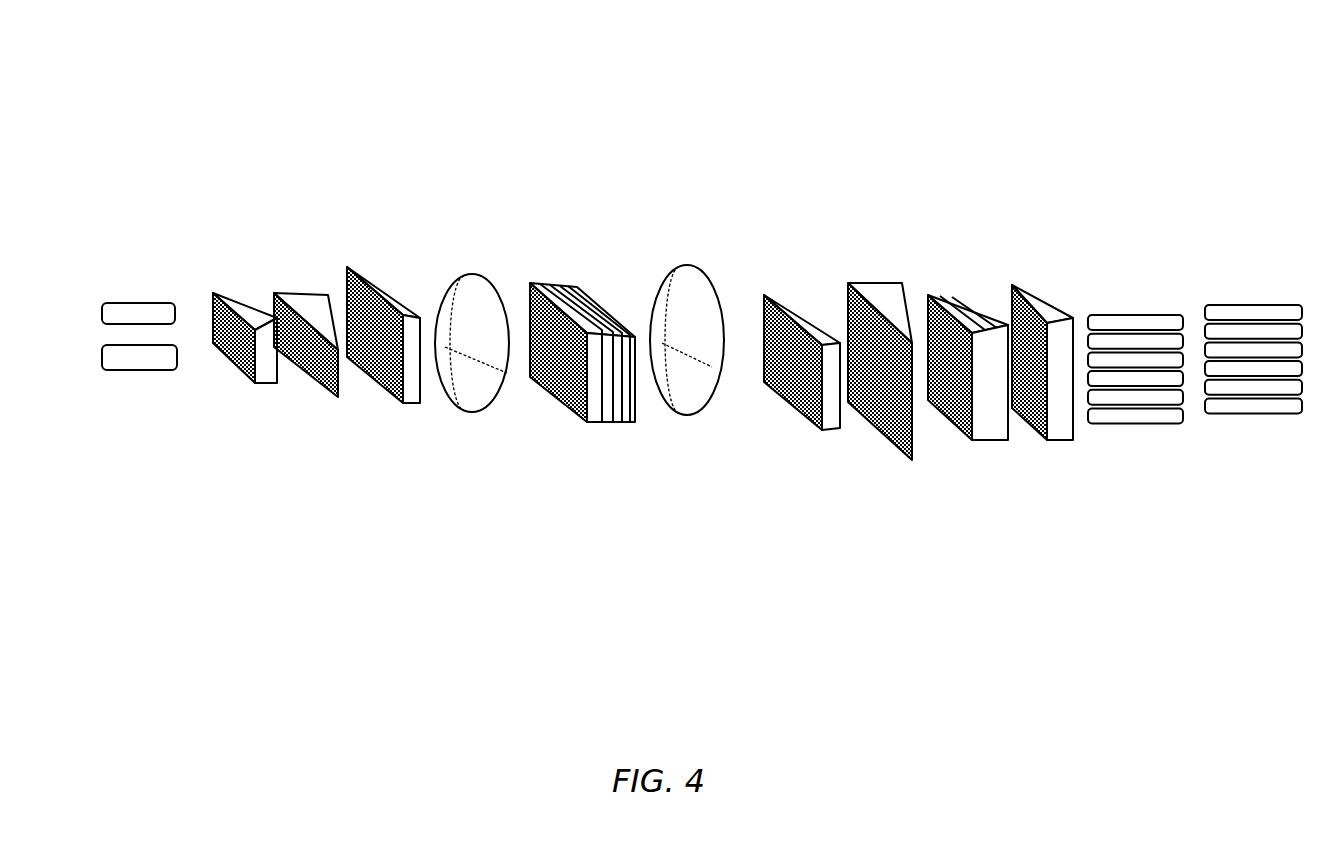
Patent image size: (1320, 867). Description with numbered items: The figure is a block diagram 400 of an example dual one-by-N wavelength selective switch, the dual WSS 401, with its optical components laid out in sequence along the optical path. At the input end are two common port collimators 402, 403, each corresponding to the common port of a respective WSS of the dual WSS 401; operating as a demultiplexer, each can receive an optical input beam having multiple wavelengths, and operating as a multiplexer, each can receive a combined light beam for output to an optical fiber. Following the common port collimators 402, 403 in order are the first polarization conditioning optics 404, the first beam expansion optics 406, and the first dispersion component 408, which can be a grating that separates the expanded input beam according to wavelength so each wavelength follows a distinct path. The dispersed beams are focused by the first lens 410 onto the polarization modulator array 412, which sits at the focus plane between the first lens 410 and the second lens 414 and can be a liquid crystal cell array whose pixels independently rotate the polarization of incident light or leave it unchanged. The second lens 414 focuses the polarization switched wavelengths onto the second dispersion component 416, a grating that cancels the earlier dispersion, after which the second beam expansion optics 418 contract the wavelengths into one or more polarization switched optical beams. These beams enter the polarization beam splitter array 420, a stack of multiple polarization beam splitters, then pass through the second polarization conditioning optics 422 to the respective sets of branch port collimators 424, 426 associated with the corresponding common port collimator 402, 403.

The block diagram 400 is at (188, 73).
The dual 1×N WSS 401 is at (328, 563).
The common port collimator 402 is at (145, 290).
The common port collimator 403 is at (152, 375).
The first polarization conditioning optics 404 is at (223, 280).
The first beam expansion optics 406 is at (302, 283).
The first dispersion component 408 is at (355, 255).
The first lens 410 is at (470, 265).
The polarization modulator array 412 is at (553, 263).
The second lens 414 is at (682, 253).
The second dispersion component 416 is at (773, 277).
The second beam expansion optics 418 is at (873, 268).
The polarization beam splitter array 420 is at (953, 278).
The second polarization conditioning optics 422 is at (1023, 275).
The branch port collimators 424 is at (1130, 290).
The branch port collimators 426 is at (1238, 292).